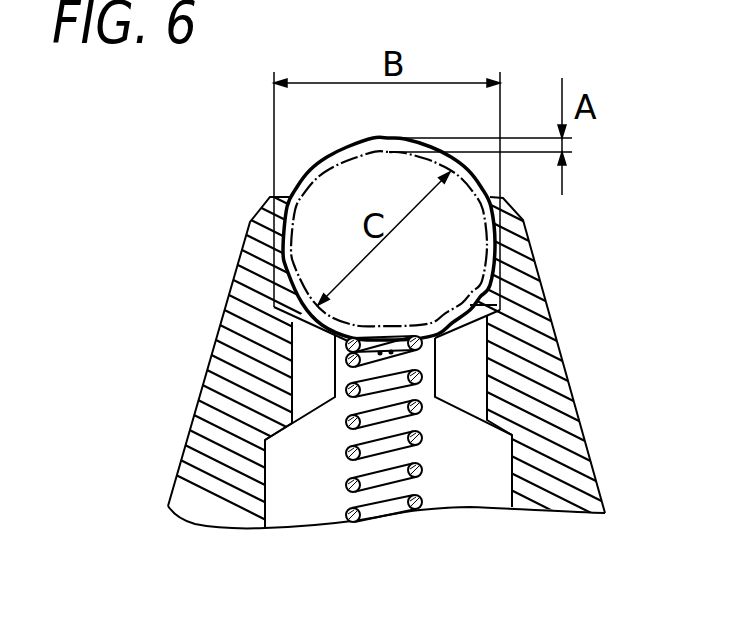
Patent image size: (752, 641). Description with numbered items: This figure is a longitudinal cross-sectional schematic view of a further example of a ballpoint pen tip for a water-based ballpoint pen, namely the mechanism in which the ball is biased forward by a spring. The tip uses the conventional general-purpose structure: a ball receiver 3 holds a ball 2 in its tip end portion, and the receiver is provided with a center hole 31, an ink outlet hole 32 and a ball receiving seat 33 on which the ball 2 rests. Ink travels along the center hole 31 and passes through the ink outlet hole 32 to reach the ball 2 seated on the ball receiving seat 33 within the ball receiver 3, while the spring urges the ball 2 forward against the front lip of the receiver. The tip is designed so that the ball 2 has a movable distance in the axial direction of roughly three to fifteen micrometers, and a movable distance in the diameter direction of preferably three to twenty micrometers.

The ball 2 is at (300, 247).
The ball receiver 3 is at (498, 280).
The center hole 31 is at (350, 373).
The ink outlet hole 32 is at (462, 383).
The ball receiving seat 33 is at (470, 305).